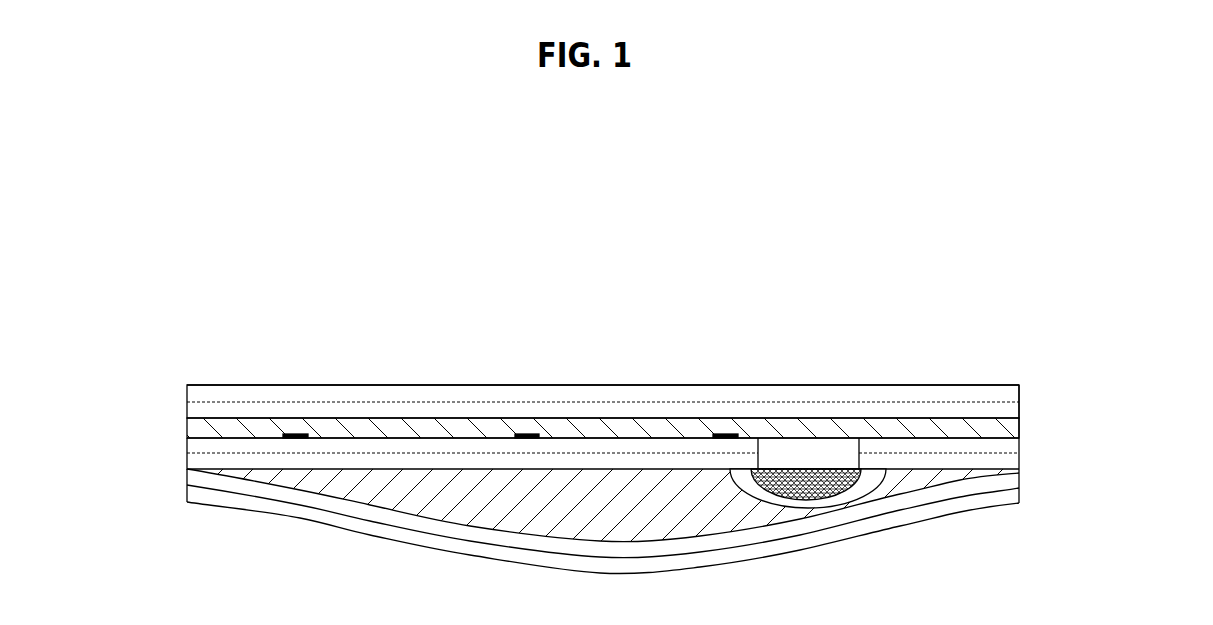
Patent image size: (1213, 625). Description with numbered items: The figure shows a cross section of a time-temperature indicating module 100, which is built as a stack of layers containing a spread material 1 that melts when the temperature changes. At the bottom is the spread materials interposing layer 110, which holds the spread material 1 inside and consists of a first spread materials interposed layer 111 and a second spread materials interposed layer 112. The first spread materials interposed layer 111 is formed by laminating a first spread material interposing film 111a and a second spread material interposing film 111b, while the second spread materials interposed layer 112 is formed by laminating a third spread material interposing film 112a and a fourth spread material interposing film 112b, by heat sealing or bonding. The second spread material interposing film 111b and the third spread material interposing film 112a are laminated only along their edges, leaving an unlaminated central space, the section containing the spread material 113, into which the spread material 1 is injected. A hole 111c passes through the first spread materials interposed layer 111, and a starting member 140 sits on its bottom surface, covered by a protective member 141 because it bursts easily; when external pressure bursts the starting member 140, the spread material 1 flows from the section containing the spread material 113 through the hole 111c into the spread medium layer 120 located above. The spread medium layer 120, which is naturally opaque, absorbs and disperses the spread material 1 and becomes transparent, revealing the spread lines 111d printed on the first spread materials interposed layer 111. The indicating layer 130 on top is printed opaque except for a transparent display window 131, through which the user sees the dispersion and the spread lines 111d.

The spread material 1 is at (664, 505).
The time-temperature indicating module 100 is at (102, 296).
The spread materials interposing layer 110 is at (186, 438).
The first spread materials interposed layer 111 is at (691, 443).
The first spread material interposing film 111a is at (1019, 443).
The second spread material interposing film 111b is at (1020, 463).
The hole 111c is at (803, 453).
The spread lines 111d is at (295, 440).
The second spread materials interposed layer 112 is at (664, 495).
The third spread material interposing film 112a is at (1017, 480).
The fourth spread material interposing film 112b is at (1007, 497).
The section containing the spread material 113 is at (380, 494).
The spread medium layer 120 is at (187, 428).
The indicating layer 130 is at (185, 418).
The display window 131 is at (727, 385).
The starting member 140 is at (843, 477).
The protective member 141 is at (815, 502).